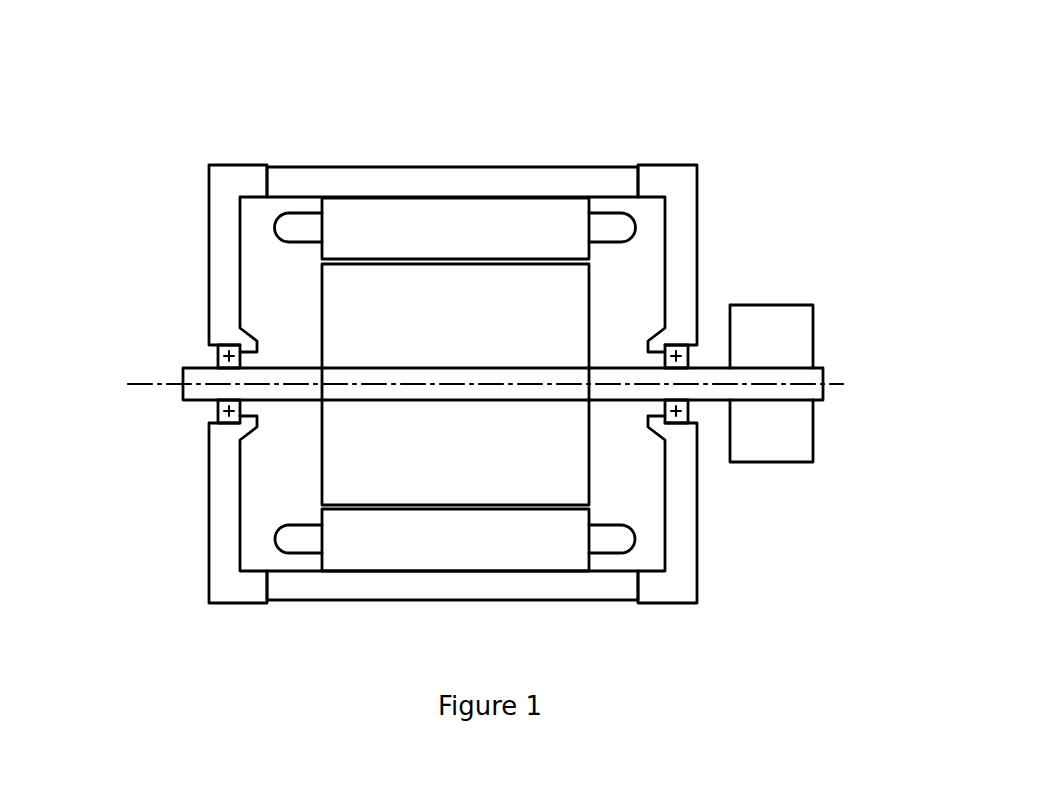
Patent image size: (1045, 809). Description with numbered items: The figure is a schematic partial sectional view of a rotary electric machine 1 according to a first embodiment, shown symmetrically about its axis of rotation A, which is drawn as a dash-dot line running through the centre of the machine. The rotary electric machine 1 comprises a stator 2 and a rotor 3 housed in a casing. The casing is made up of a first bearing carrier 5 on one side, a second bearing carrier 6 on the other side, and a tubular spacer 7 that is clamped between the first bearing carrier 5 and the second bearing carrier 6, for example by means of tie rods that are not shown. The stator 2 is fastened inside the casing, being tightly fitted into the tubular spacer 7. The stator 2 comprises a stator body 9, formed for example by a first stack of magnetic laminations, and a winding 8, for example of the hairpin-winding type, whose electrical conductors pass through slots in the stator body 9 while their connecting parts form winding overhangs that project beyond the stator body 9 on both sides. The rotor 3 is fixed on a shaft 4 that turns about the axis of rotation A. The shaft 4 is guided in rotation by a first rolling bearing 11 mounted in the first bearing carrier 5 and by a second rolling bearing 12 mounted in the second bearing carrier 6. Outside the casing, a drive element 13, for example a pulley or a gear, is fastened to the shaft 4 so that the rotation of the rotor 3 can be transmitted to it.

The rotary electric machine 1 is at (150, 127).
The stator 2 is at (647, 556).
The rotor 3 is at (302, 493).
The shaft 4 is at (183, 396).
The first bearing carrier 5 is at (216, 299).
The second bearing carrier 6 is at (678, 188).
The tubular spacer 7 is at (559, 190).
The winding 8 is at (642, 231).
The stator body 9 is at (387, 558).
The first rolling bearing 11 is at (218, 357).
The second rolling bearing 12 is at (688, 407).
The drive element 13 is at (800, 416).
The axis of rotation A is at (843, 383).